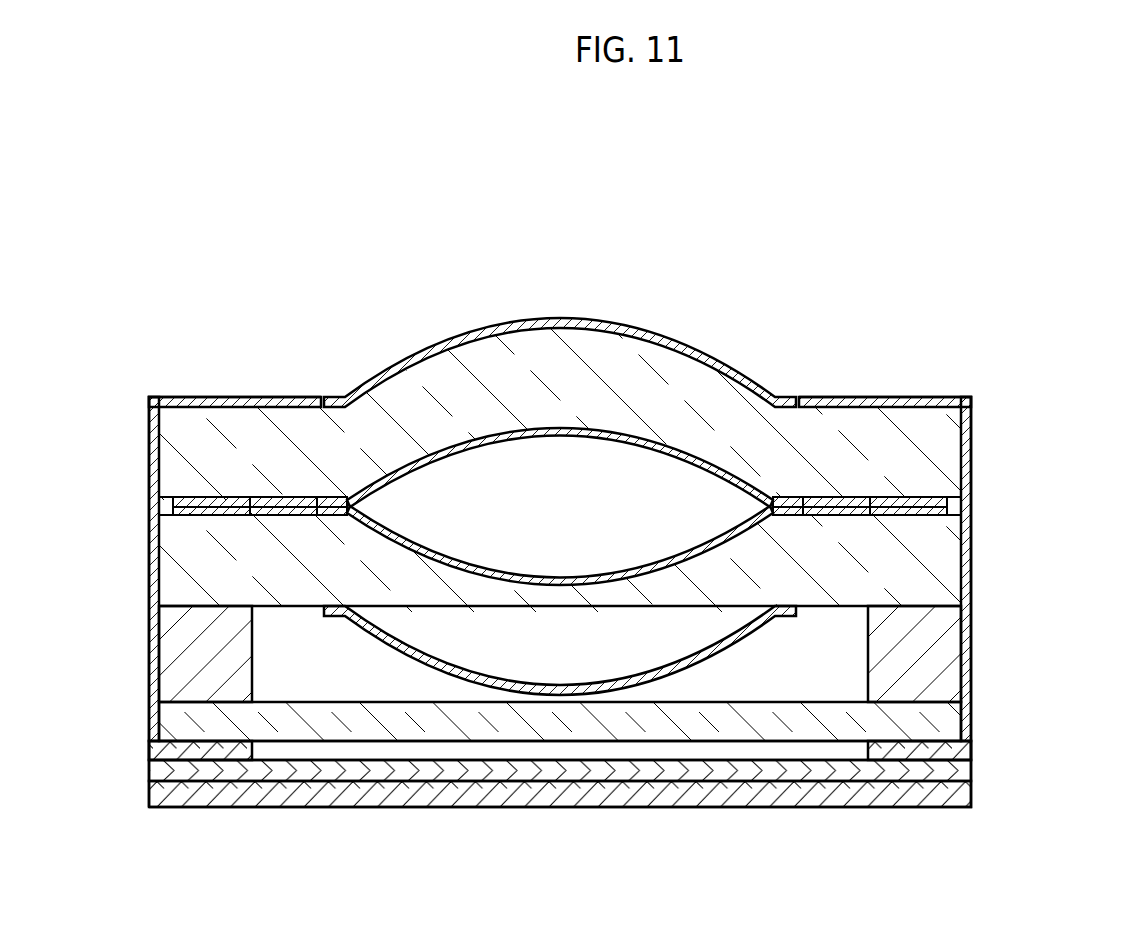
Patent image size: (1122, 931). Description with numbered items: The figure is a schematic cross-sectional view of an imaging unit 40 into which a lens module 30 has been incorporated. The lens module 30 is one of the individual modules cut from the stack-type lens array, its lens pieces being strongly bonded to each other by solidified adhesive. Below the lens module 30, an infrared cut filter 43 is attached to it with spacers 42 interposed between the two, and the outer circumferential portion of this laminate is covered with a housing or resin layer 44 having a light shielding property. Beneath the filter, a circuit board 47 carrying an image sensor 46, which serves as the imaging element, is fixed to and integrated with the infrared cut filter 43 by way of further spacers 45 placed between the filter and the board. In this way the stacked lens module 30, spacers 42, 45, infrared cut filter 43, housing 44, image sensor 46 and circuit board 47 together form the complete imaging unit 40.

The imaging unit 40 is at (255, 302).
The lens module 30 is at (732, 398).
The spacers 42 is at (952, 642).
The infrared cut filter 43 is at (953, 723).
The housing or resin layer 44 is at (968, 541).
The spacers 45 is at (150, 746).
The image sensor 46 is at (968, 771).
The circuit board 47 is at (150, 796).